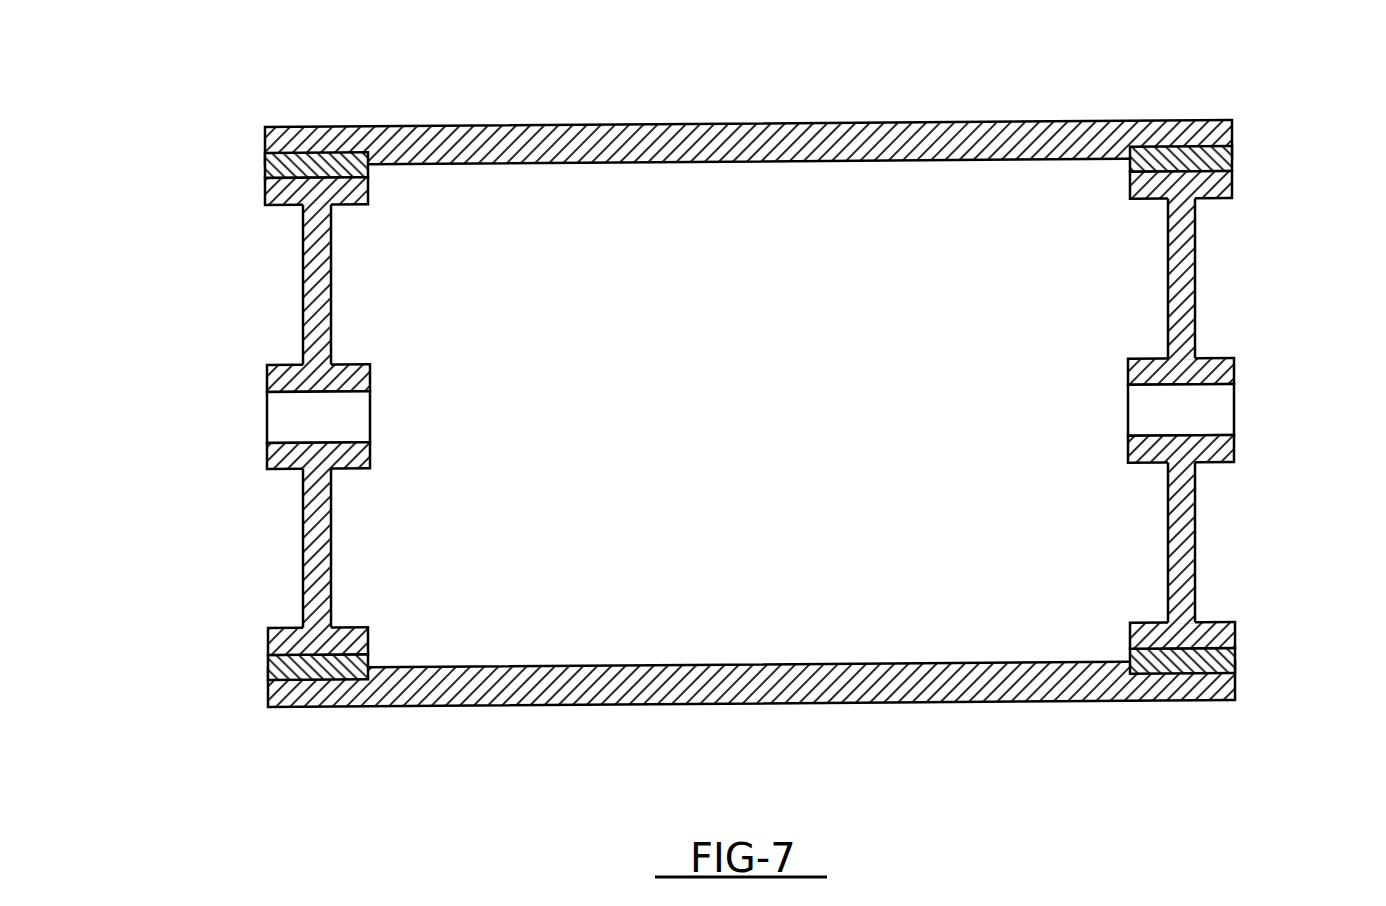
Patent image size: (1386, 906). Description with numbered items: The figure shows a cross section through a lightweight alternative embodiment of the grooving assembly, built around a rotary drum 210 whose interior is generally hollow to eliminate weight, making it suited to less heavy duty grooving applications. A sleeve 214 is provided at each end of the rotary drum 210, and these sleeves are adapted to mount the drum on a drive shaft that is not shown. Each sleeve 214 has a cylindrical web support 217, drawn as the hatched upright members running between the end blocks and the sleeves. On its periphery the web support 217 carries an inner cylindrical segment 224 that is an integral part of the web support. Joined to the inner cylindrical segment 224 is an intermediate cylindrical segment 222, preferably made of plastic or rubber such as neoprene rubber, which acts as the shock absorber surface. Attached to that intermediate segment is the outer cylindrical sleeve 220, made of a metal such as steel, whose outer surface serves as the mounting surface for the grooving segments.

The rotary drum 210 is at (1045, 18).
The sleeve 214 is at (368, 372).
The cylindrical web support 217 is at (330, 260).
The outer cylindrical sleeve 220 is at (265, 138).
The intermediate cylindrical segment 222 is at (265, 163).
The inner cylindrical segment 224 is at (265, 200).